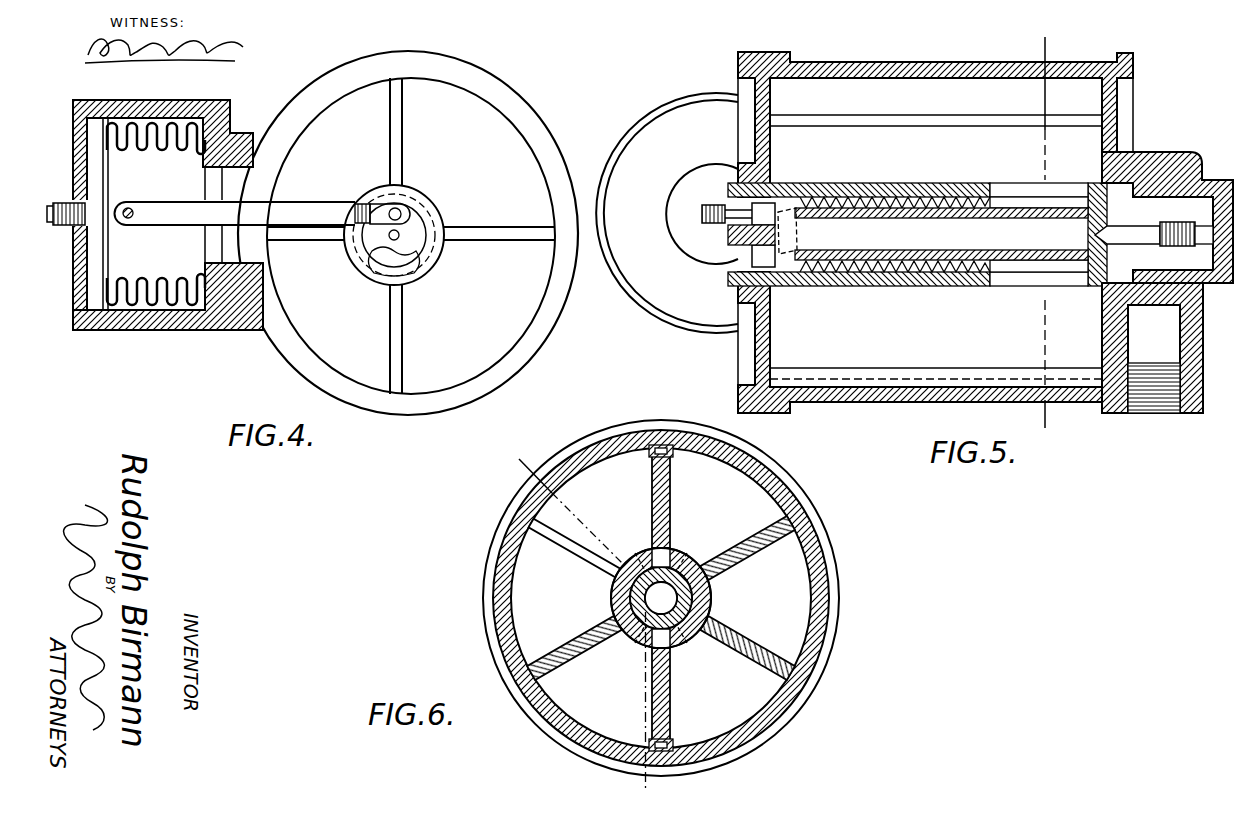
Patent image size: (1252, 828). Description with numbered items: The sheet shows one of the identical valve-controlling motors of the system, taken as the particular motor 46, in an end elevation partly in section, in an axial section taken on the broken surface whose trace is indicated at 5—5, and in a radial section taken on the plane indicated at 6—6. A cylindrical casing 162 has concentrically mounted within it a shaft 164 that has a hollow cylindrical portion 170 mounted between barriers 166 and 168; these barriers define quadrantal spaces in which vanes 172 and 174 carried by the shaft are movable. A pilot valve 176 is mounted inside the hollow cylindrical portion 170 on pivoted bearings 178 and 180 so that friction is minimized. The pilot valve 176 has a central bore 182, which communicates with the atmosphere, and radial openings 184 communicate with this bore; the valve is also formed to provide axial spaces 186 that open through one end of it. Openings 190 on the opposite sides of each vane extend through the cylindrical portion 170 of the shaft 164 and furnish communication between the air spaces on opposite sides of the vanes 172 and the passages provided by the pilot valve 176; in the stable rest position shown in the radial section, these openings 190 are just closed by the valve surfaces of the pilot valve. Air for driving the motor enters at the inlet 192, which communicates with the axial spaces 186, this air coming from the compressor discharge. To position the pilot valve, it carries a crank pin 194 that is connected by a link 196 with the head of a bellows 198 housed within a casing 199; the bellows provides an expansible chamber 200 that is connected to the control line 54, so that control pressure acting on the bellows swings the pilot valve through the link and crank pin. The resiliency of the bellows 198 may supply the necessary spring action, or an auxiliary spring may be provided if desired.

In FIG. 4, the valve-controlling motor 46 is at (533, 85).
In FIG. 4, the control line 54 is at (73, 108).
In FIG. 4, the bellows 198 is at (137, 150).
In FIG. 4, the link 196 is at (286, 205).
In FIG. 5, the link 196 is at (733, 221).
In FIG. 4, the casing 199 is at (165, 320).
In FIG. 4, the expansible chamber 200 is at (95, 292).
In FIG. 5, the cylindrical casing 162 is at (912, 62).
In FIG. 6, the cylindrical casing 162 is at (815, 532).
In FIG. 5, the shaft 164 is at (1213, 187).
In FIG. 6, the shaft 164 is at (606, 593).
In FIG. 6, the barrier 166 is at (557, 522).
In FIG. 6, the barrier 168 is at (753, 533).
In FIG. 5, the hollow cylindrical portion 170 is at (915, 286).
In FIG. 6, the hollow cylindrical portion 170 is at (703, 553).
In FIG. 5, the vane 172 is at (833, 140).
In FIG. 6, the vane 172 is at (652, 476).
In FIG. 5, the vane 174 is at (900, 357).
In FIG. 6, the vane 174 is at (671, 708).
In FIG. 5, the pilot valve 176 is at (898, 204).
In FIG. 6, the pilot valve 176 is at (684, 622).
In FIG. 5, the pivoted bearing 178 is at (1135, 232).
In FIG. 5, the pivoted bearing 180 is at (748, 246).
In FIG. 5, the central bore 182 is at (947, 246).
In FIG. 6, the central bore 182 is at (645, 598).
In FIG. 5, the radial opening 184 is at (1027, 270).
In FIG. 6, the radial opening 184 is at (658, 548).
In FIG. 5, the axial space 186 is at (1047, 202).
In FIG. 6, the axial space 186 is at (697, 600).
In FIG. 5, the opening 190 is at (1015, 185).
In FIG. 6, the opening 190 is at (640, 557).
In FIG. 5, the air inlet 192 is at (1183, 333).
In FIG. 5, the crank pin 194 is at (735, 212).
In FIG. 6, the section trace 5— 5 is at (635, 794).
In FIG. 5, the section plane 6— 6 is at (1058, 432).